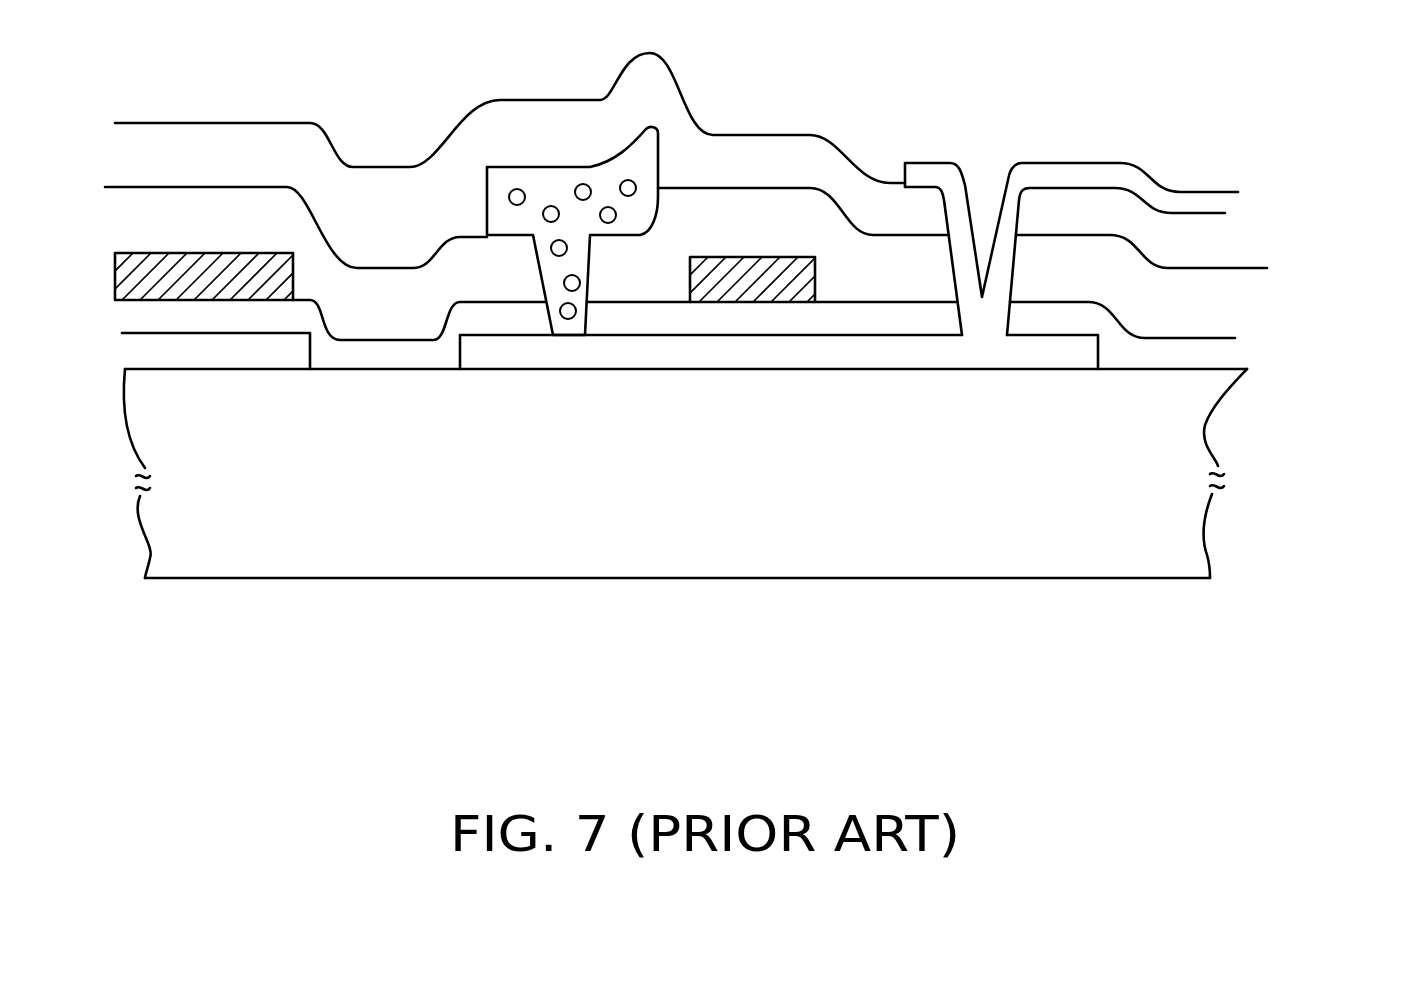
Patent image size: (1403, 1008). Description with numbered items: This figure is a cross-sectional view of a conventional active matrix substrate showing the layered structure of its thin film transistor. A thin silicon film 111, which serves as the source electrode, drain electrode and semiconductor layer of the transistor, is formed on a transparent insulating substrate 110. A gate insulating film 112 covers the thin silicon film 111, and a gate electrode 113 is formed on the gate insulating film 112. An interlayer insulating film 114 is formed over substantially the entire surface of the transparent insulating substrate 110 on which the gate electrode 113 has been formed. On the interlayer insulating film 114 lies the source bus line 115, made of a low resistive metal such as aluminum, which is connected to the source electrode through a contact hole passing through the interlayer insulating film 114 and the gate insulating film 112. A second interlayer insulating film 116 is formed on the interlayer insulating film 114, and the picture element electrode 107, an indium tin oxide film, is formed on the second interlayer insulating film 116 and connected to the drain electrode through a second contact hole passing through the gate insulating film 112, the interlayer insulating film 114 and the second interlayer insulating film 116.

The picture element electrode 107 is at (1053, 170).
The transparent insulating substrate 110 is at (1190, 528).
The thin silicon film 111 is at (647, 355).
The gate insulating film 112 is at (1243, 353).
The gate electrode 113 is at (783, 262).
The interlayer insulating film 114 is at (1218, 293).
The source bus line 115 is at (552, 188).
The second interlayer insulating film 116 is at (1135, 218).